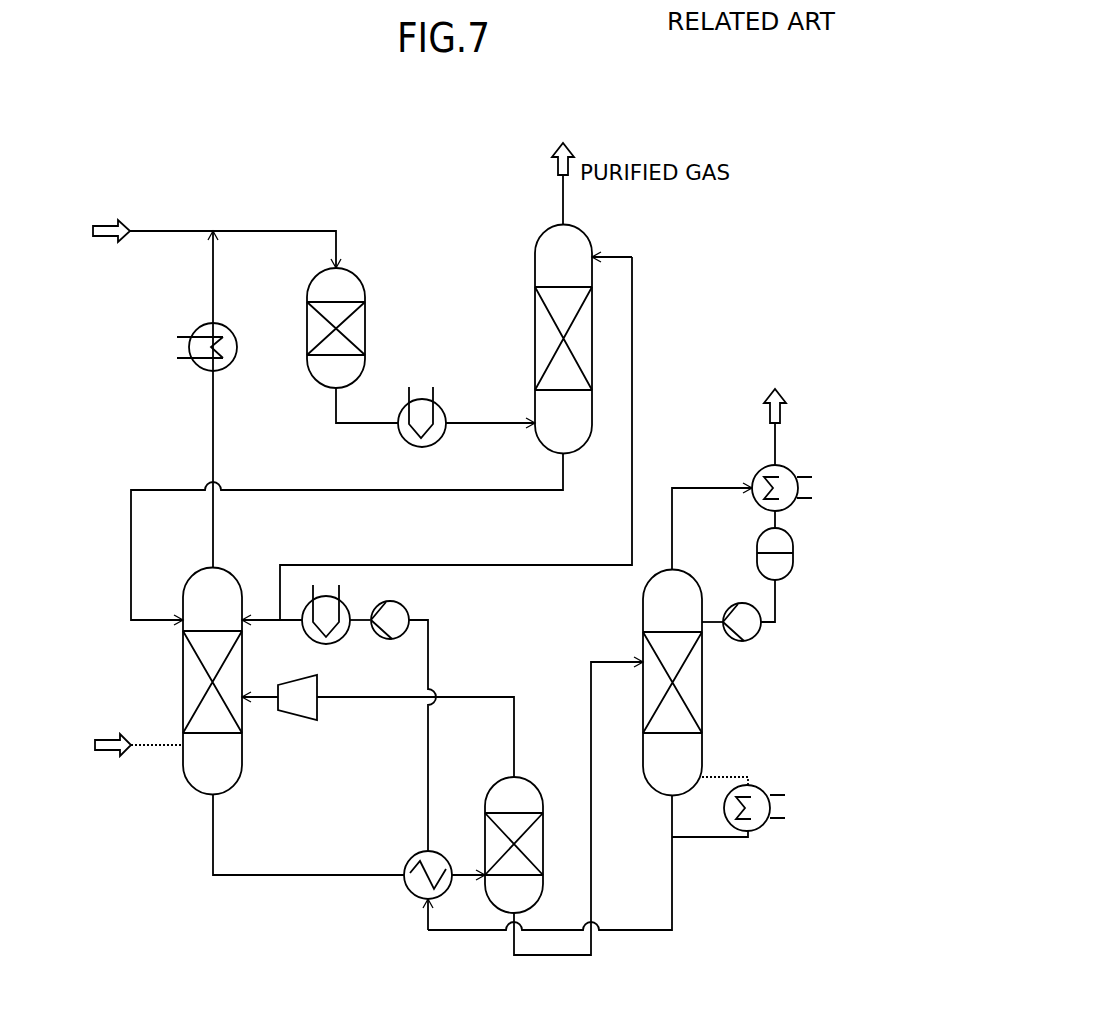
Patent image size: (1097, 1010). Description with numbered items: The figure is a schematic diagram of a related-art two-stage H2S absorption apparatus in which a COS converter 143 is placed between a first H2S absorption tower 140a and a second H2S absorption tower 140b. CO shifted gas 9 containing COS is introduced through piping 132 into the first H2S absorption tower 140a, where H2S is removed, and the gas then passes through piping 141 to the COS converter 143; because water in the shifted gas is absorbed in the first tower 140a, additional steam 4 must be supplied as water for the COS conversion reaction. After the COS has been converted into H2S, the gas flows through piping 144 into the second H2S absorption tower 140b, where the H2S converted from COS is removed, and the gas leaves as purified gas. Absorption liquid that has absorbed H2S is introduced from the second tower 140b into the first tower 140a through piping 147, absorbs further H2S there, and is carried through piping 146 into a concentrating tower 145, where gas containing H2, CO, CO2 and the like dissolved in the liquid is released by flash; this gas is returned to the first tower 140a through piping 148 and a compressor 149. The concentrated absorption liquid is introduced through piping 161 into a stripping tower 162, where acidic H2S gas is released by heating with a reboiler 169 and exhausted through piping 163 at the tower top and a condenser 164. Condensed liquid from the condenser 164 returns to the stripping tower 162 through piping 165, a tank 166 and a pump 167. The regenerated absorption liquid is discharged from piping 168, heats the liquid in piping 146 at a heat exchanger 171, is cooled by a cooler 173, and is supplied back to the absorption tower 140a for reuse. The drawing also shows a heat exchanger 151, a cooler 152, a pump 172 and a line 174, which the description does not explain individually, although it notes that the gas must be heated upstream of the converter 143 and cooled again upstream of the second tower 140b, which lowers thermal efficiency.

The steam 4 is at (111, 249).
The CO shifted gas 9 is at (113, 765).
The piping 132 is at (148, 745).
The first H2S absorption tower 140a is at (200, 572).
The second H2S absorption tower 140b is at (592, 236).
The piping 141 is at (278, 231).
The COS converter 143 is at (358, 273).
The piping 144 is at (492, 421).
The concentrating tower 145 is at (404, 435).
The piping 146 is at (285, 878).
The piping 147 is at (130, 534).
The piping 148 is at (487, 695).
The compressor 149 is at (294, 712).
The heat exchanger 151 is at (198, 364).
The cooler 152 is at (402, 410).
The piping 161 is at (592, 858).
The stripping tower 162 is at (704, 720).
The piping 163 is at (706, 488).
The condenser 164 is at (766, 466).
The piping 165 is at (775, 597).
The tank 166 is at (757, 547).
The pump 167 is at (732, 641).
The piping 168 is at (676, 917).
The reboiler 169 is at (752, 832).
The heat exchanger 171 is at (406, 886).
The pump 172 is at (396, 603).
The cooler 173 is at (336, 640).
The lean solution return line 174 is at (298, 564).